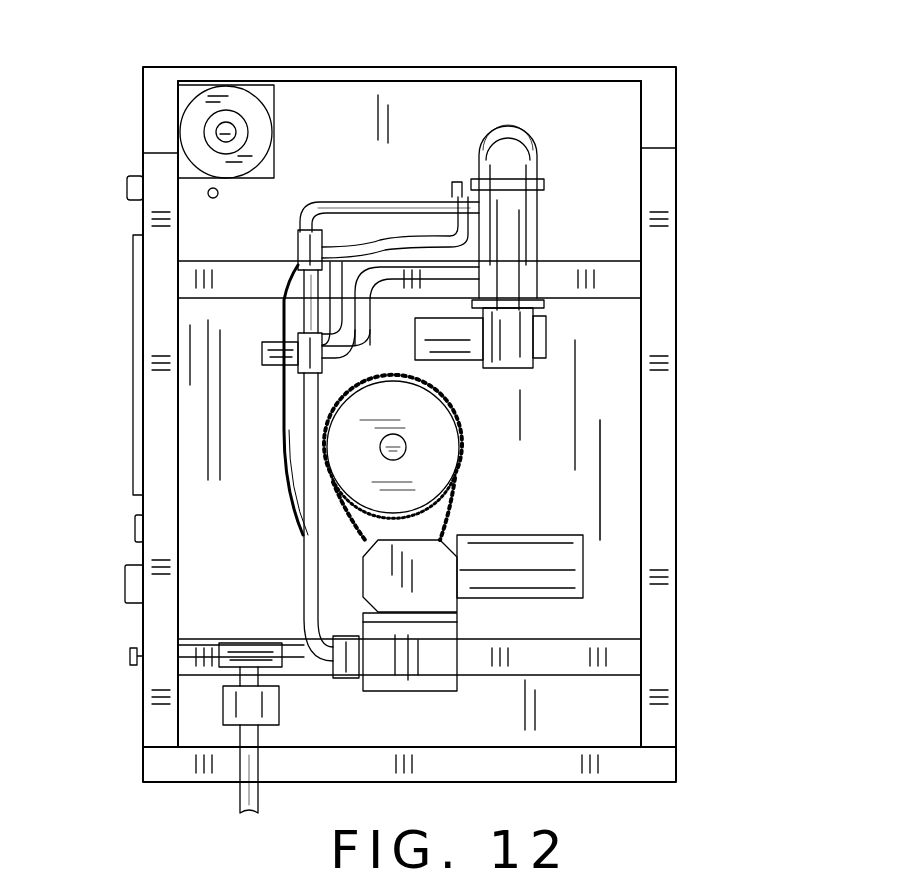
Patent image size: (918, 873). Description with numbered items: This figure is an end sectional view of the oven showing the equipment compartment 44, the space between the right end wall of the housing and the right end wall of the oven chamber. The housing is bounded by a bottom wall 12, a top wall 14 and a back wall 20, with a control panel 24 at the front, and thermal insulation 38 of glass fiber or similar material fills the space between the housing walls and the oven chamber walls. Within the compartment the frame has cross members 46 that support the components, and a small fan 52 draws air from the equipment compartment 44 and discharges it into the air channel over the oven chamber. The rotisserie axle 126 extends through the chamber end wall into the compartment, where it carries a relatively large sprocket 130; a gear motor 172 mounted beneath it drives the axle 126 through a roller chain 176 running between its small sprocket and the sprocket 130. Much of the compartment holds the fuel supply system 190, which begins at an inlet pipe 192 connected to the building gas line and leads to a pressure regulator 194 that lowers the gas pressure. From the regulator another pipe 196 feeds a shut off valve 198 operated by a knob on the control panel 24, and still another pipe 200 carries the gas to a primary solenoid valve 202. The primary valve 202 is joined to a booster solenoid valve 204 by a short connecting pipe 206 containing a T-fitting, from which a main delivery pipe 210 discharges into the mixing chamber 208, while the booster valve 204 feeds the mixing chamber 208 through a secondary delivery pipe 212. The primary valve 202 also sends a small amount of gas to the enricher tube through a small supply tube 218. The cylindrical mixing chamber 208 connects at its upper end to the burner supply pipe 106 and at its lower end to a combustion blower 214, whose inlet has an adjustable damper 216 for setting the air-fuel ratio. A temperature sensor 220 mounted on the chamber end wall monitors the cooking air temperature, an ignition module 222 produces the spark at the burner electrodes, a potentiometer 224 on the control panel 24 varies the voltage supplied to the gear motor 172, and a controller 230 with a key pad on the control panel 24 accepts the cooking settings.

The bottom wall 12 is at (573, 785).
The top wall 14 is at (547, 67).
The back wall 20 is at (678, 362).
The control panel 24 is at (143, 630).
The thermal insulation 38 is at (628, 562).
The equipment compartment 44 is at (622, 474).
The cross members 46 is at (628, 276).
The fan 52 is at (245, 100).
The supply pipe 106 is at (515, 152).
The axle 126 is at (404, 450).
The sprocket 130 is at (432, 435).
The gear motor 172 is at (513, 578).
The roller chain 176 is at (430, 522).
The fuel supply system 190 is at (280, 445).
The inlet pipe 192 is at (240, 795).
The pressure regulator 194 is at (270, 707).
The pipe 196 is at (240, 678).
The shut off valve 198 is at (248, 650).
The pipe 200 is at (303, 558).
The primary solenoid valve 202 is at (305, 356).
The booster solenoid valve 204 is at (305, 240).
The connecting pipe 206 is at (303, 304).
The mixing chamber 208 is at (516, 233).
The main delivery pipe 210 is at (368, 322).
The secondary delivery pipe 212 is at (410, 196).
The combustion blower 214 is at (503, 345).
The adjustable damper 216 is at (541, 335).
The small supply tube 218 is at (365, 245).
The temperature sensor 220 is at (210, 199).
The ignition module 222 is at (347, 680).
The potentiometer 224 is at (130, 198).
The controller 230 is at (133, 370).